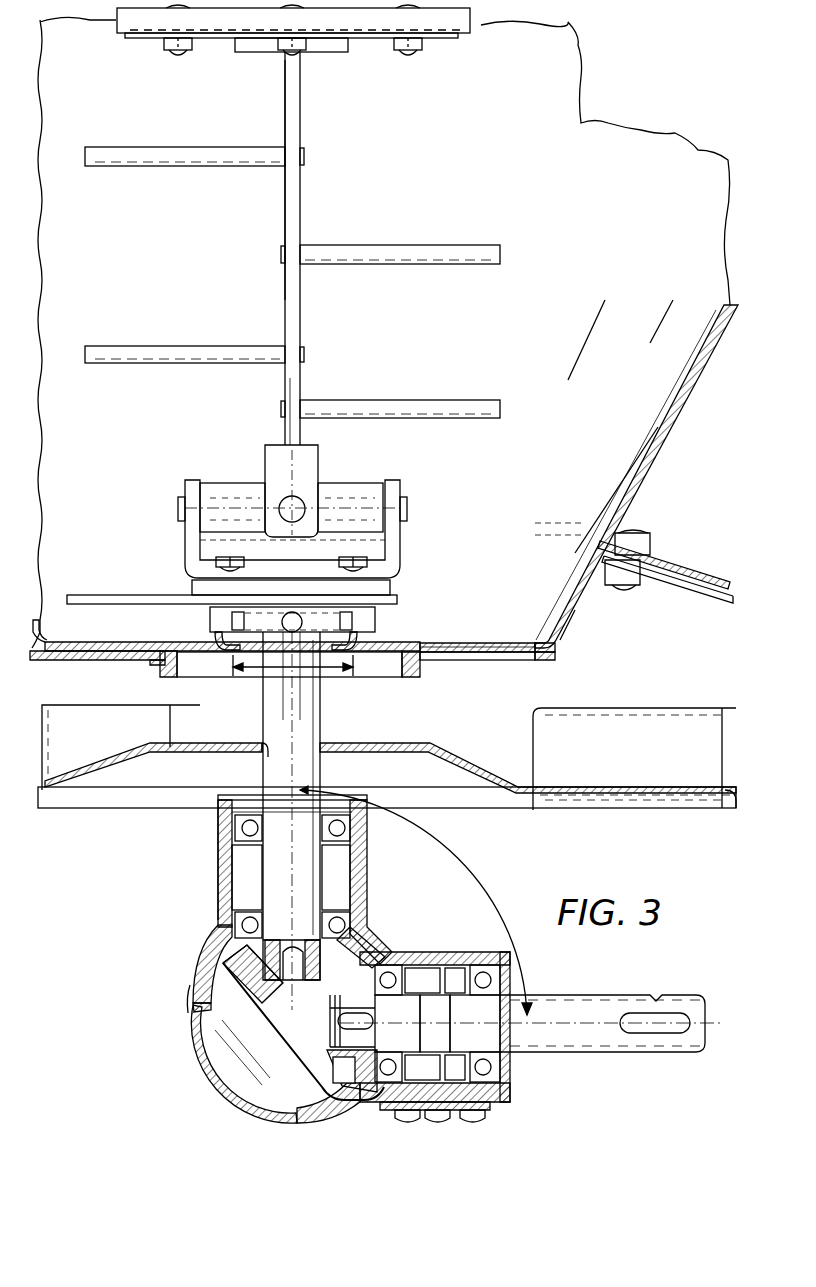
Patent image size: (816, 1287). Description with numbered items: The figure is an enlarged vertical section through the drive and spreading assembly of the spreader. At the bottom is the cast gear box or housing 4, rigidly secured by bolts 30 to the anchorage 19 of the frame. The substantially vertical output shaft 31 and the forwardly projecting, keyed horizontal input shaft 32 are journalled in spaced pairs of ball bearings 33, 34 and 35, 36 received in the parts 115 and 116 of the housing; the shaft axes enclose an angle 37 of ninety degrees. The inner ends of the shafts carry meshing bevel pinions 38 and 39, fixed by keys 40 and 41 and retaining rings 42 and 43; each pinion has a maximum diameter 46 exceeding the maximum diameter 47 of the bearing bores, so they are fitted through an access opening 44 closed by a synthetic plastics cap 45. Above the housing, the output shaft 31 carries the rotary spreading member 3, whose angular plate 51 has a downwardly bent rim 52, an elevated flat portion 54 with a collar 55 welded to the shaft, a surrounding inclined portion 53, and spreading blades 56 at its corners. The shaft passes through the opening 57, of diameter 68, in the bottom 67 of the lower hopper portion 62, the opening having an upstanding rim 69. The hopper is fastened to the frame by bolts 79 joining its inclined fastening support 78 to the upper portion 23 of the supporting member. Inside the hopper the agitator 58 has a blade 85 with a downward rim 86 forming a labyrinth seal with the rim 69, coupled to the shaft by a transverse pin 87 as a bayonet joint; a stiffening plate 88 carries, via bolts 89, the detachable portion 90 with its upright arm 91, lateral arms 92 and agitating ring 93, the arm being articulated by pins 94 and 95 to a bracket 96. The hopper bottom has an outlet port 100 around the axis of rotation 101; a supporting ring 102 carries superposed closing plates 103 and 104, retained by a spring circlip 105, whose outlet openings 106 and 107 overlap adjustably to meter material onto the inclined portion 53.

The rotary spreading member 3 is at (90, 812).
The gear box or housing 4 is at (214, 886).
The anchorage 19 is at (528, 1118).
The upper portion of the supporting member 23 is at (710, 576).
The bolts 30 is at (480, 1108).
The output shaft 31 is at (245, 857).
The input shaft 32 is at (570, 995).
The ball bearing 33 is at (235, 920).
The ball bearing 34 is at (240, 826).
The ball bearing 35 is at (390, 964).
The ball bearing 36 is at (480, 964).
The angle 37 is at (478, 880).
The bevel pinion 38 is at (225, 963).
The bevel pinion 39 is at (388, 1048).
The key 40 is at (292, 940).
The key 41 is at (368, 1016).
The retaining ring 42 is at (254, 981).
The retaining ring 43 is at (327, 1060).
The access opening 44 is at (196, 997).
The synthetic plastics cap 45 is at (228, 1035).
The maximum diameter of the bevel pinions 46 is at (428, 1034).
The maximum diameter of the bearing bores 47 is at (458, 1025).
The plate 51 is at (590, 788).
The rim 52 is at (723, 806).
The inclined portion 53 is at (478, 768).
The flat portion 54 is at (232, 748).
The collar 55 is at (262, 757).
The spreading blades 56 is at (72, 702).
The opening 57 is at (232, 655).
The agitator 58 is at (160, 421).
The lower hopper portion 62 is at (660, 440).
The hopper bottom 67 is at (100, 641).
The diameter of the opening 68 is at (316, 683).
The rim 69 is at (355, 621).
The inclined fastening support 78 is at (637, 533).
The bolts 79 is at (637, 588).
The blade 85 is at (104, 600).
The rim 86 is at (208, 618).
The transverse pin 87 is at (300, 668).
The stiffening plate 88 is at (390, 588).
The bolts 89 is at (330, 559).
The detachable portion 90 is at (305, 311).
The upright arm 91 is at (283, 95).
The laterally projecting arms 92 is at (148, 167).
The agitating ring 93 is at (120, 26).
The pins 94 is at (296, 507).
The pins 95 is at (227, 495).
The bracket 96 is at (185, 490).
The outlet port 100 is at (478, 642).
The axis of rotation 101 is at (292, 396).
The supporting ring 102 is at (178, 678).
The closing plate 103 is at (552, 645).
The closing plate 104 is at (552, 656).
The spring circlip 105 is at (148, 664).
The outlet opening 106 is at (508, 646).
The outlet opening 107 is at (494, 661).
The bearing-receiving part of the housing 115 is at (360, 885).
The bearing-receiving part of the housing 116 is at (430, 952).